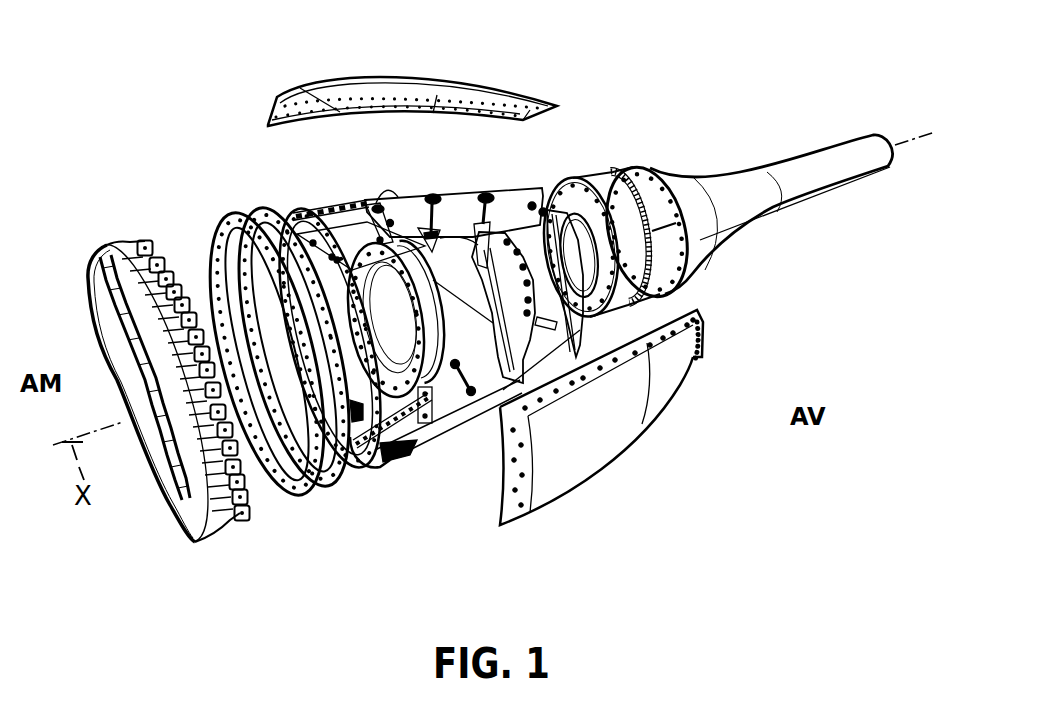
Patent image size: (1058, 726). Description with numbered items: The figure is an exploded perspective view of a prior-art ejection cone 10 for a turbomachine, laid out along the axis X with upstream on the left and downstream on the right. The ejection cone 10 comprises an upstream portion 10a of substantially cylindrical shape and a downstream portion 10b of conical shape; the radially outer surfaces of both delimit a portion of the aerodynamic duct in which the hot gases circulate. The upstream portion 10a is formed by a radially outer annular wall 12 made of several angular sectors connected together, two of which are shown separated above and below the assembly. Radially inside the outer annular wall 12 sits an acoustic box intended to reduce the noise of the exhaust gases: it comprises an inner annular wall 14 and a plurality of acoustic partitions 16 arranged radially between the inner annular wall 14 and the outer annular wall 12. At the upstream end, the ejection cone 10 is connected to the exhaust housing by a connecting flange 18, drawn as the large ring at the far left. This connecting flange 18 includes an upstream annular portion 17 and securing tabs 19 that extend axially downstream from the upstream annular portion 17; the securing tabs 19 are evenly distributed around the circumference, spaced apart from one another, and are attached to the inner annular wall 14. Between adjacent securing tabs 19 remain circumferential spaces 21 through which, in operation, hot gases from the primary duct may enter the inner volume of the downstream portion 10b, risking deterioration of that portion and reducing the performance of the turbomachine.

The ejection cone 10 is at (178, 118).
The upstream portion 10a is at (572, 547).
The downstream portion 10b is at (753, 234).
The radially outer annular wall 12 is at (487, 76).
The inner annular wall 14 is at (402, 420).
The acoustic partitions 16 is at (488, 263).
The upstream annular portion 17 is at (207, 517).
The connecting flange 18 is at (120, 243).
The securing tabs 19 is at (242, 517).
The circumferential spaces 21 is at (178, 275).